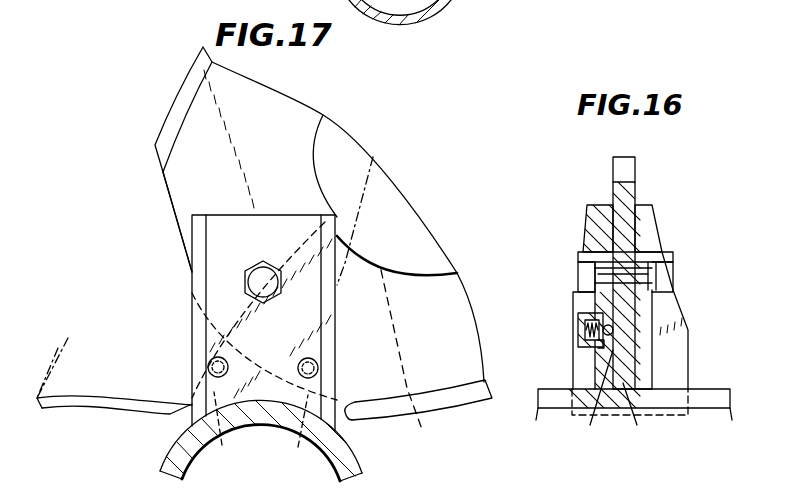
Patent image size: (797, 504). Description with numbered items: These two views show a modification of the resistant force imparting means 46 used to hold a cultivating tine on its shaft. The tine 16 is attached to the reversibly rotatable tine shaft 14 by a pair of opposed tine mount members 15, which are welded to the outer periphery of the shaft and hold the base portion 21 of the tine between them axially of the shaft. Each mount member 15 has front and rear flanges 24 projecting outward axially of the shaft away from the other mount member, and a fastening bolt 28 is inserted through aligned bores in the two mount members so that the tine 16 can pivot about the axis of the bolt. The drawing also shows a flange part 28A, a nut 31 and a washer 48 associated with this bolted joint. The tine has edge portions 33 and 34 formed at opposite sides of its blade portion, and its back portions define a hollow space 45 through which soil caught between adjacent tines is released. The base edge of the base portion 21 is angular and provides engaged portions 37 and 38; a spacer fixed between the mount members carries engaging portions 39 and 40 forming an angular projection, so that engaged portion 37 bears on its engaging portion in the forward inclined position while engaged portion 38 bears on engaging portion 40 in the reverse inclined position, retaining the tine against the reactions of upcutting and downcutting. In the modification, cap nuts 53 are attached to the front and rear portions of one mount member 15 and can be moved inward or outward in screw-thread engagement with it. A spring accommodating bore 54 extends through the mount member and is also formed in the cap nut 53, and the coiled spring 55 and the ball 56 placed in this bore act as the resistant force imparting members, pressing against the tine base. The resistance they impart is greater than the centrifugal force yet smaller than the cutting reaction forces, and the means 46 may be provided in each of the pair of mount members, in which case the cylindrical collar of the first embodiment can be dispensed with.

In FIG. 17, the tine shaft 14 is at (340, 462).
In FIG. 16, the tine shaft 14 is at (715, 392).
In FIG. 17, the tine mount member 15 is at (278, 210).
In FIG. 16, the tine mount member 15 is at (650, 195).
In FIG. 17, the tine 16 is at (323, 110).
In FIG. 16, the tine 16 is at (646, 167).
In FIG. 17, the base portion 21 is at (405, 393).
In FIG. 16, the base portion 21 is at (648, 350).
In FIG. 17, the flange 24 is at (192, 278).
In FIG. 17, the fastening bolt 28 is at (256, 268).
In FIG. 16, the fastening bolt 28 is at (632, 265).
In FIG. 16, the bolt flange 28A is at (578, 254).
In FIG. 16, the nut 31 is at (674, 257).
In FIG. 17, the edge portion 33 is at (471, 406).
In FIG. 17, the edge portion 34 is at (177, 95).
In FIG. 17, the engaged portion 37 is at (168, 207).
In FIG. 17, the engaged portion 38 is at (347, 405).
In FIG. 17, the engaging portion 39 is at (220, 431).
In FIG. 17, the engaging portion 40 is at (297, 433).
In FIG. 16, the engaging portion 40 is at (656, 419).
In FIG. 17, the hollow space 45 is at (418, 242).
In FIG. 17, the resistant force imparting means 46 is at (323, 355).
In FIG. 16, the resistant force imparting means 46 is at (570, 319).
In FIG. 16, the lock washer 48 is at (676, 278).
In FIG. 16, the cap nut 53 is at (586, 350).
In FIG. 16, the spring accommodating bore 54 is at (594, 401).
In FIG. 17, the coiled spring 55 is at (318, 370).
In FIG. 16, the coiled spring 55 is at (584, 329).
In FIG. 16, the ball 56 is at (613, 330).